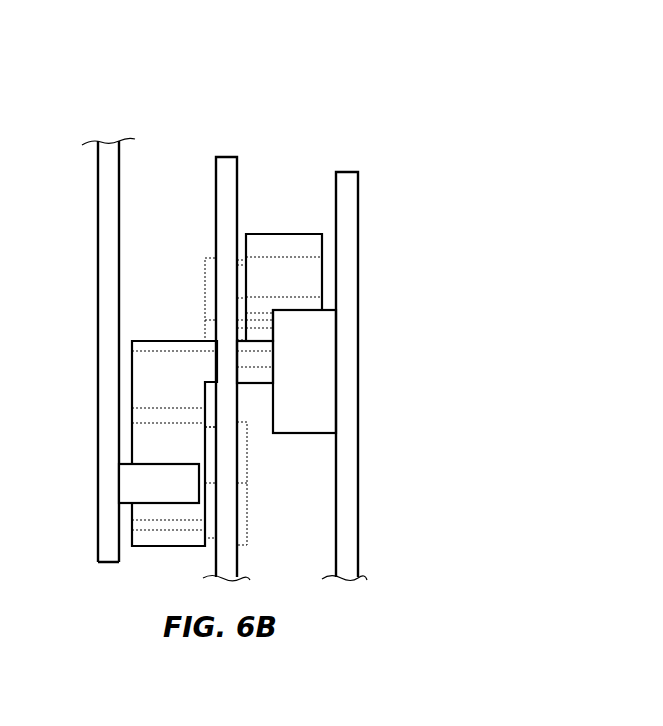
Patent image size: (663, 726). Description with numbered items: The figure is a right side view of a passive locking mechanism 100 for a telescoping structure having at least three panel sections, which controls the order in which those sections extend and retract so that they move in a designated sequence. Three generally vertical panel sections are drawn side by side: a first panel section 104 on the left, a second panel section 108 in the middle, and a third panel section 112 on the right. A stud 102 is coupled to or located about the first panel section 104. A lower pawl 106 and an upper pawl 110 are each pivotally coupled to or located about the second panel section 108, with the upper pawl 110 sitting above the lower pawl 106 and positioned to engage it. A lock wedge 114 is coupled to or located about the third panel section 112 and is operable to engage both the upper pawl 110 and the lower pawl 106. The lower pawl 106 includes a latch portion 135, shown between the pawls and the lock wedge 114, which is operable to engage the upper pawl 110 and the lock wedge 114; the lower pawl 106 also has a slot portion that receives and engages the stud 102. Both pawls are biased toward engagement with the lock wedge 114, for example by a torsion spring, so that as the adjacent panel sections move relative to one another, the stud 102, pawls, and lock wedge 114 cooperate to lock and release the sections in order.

The passive locking mechanism 100 is at (405, 100).
The stud 102 is at (135, 483).
The first panel section 104 is at (118, 170).
The lower pawl 106 is at (162, 363).
The second panel section 108 is at (237, 188).
The upper pawl 110 is at (273, 247).
The third panel section 112 is at (358, 207).
The lock wedge 114 is at (323, 373).
The latch portion 135 is at (252, 358).